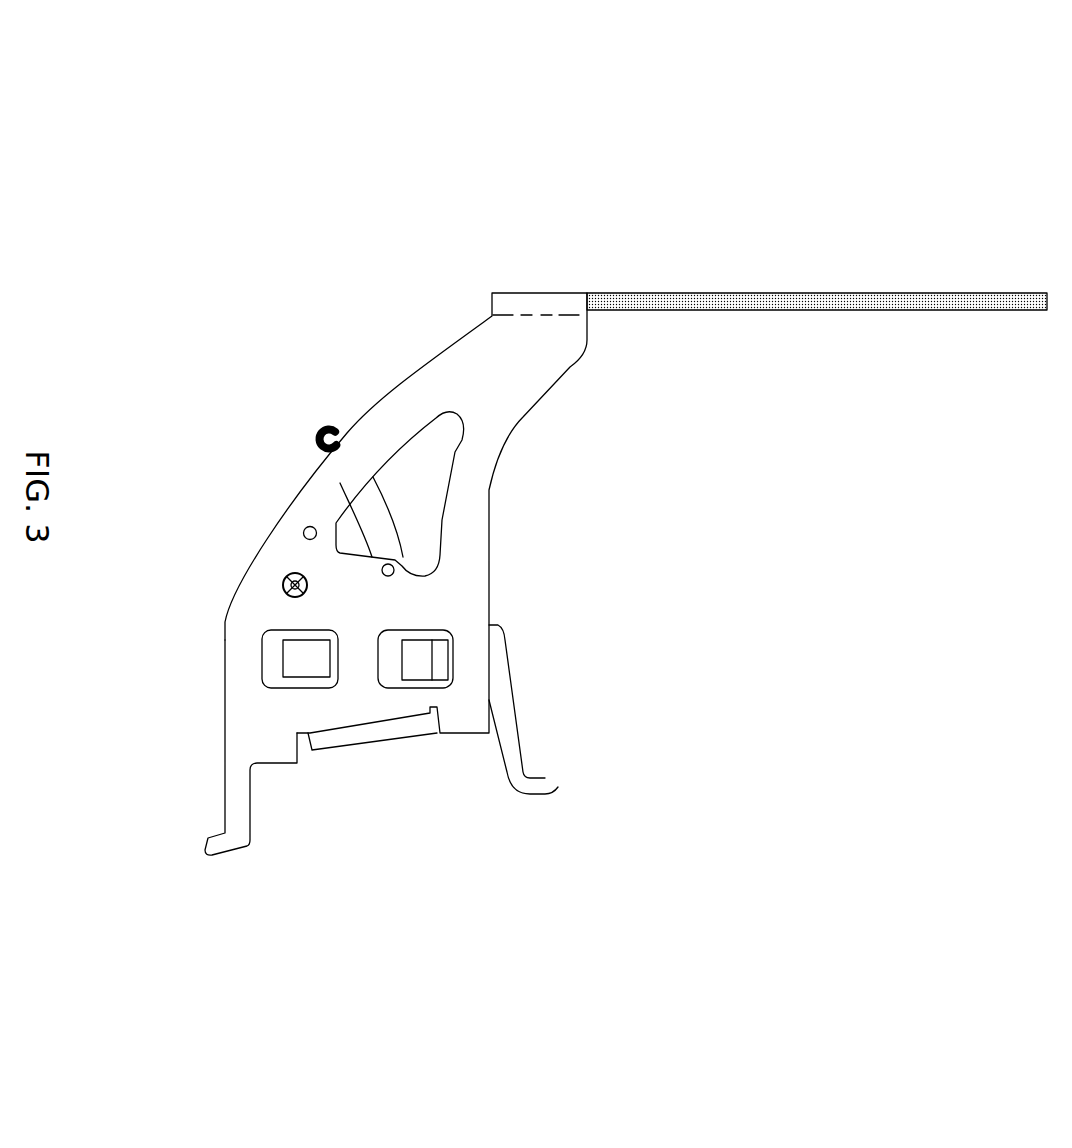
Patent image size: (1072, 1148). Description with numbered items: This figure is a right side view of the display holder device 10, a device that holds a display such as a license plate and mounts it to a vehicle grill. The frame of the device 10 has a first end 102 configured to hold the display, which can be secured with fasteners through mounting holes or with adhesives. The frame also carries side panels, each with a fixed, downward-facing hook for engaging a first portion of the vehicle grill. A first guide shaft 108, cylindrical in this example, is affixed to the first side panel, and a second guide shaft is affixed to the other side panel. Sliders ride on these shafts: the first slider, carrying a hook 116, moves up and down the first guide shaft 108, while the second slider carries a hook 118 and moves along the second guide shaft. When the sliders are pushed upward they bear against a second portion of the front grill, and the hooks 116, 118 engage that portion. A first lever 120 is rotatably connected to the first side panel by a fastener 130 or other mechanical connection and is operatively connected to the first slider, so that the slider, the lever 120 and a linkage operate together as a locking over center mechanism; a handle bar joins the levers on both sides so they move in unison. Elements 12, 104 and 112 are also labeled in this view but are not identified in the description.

The display holder device 10 is at (212, 244).
The vehicle panel 12 is at (958, 292).
The first end 102 is at (205, 855).
The fastener 104 is at (282, 588).
The first guide shaft 108 is at (357, 562).
The tab 112 is at (497, 665).
The hook 116 is at (558, 787).
The hook 118 is at (300, 652).
The first lever 120 is at (370, 500).
The fastener 130 is at (360, 700).